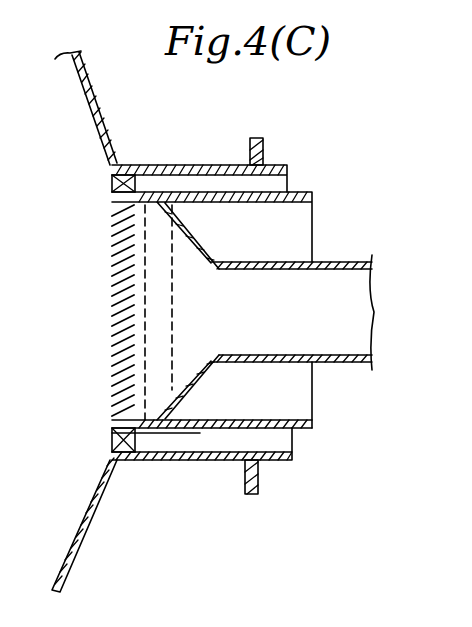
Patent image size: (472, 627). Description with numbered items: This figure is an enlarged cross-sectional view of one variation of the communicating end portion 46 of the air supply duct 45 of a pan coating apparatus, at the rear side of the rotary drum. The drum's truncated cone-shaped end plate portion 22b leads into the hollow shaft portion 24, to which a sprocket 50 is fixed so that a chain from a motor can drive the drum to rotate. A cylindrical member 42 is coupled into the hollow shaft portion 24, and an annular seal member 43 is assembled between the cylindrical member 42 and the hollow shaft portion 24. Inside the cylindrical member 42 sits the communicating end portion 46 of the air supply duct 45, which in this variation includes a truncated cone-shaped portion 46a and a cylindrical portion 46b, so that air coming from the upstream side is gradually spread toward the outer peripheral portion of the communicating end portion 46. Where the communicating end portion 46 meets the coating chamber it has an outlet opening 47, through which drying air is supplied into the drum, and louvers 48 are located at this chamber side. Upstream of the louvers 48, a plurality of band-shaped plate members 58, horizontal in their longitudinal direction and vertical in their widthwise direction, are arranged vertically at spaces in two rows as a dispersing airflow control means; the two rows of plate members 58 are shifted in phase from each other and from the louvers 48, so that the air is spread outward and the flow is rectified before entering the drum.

The end plate portion 22b is at (92, 108).
The hollow shaft portion 24 is at (207, 165).
The sprocket 50 is at (265, 150).
The outlet opening 47 is at (110, 208).
The band-shaped plate members 58 is at (176, 249).
The communicating end portion 46 is at (173, 265).
The air supply duct 45 is at (334, 262).
The louvers 48 is at (110, 296).
The truncated cone-shaped portion 46a is at (203, 380).
The annular seal member 43 is at (110, 445).
The cylindrical member 42 is at (295, 440).
The cylindrical portion 46b is at (128, 450).